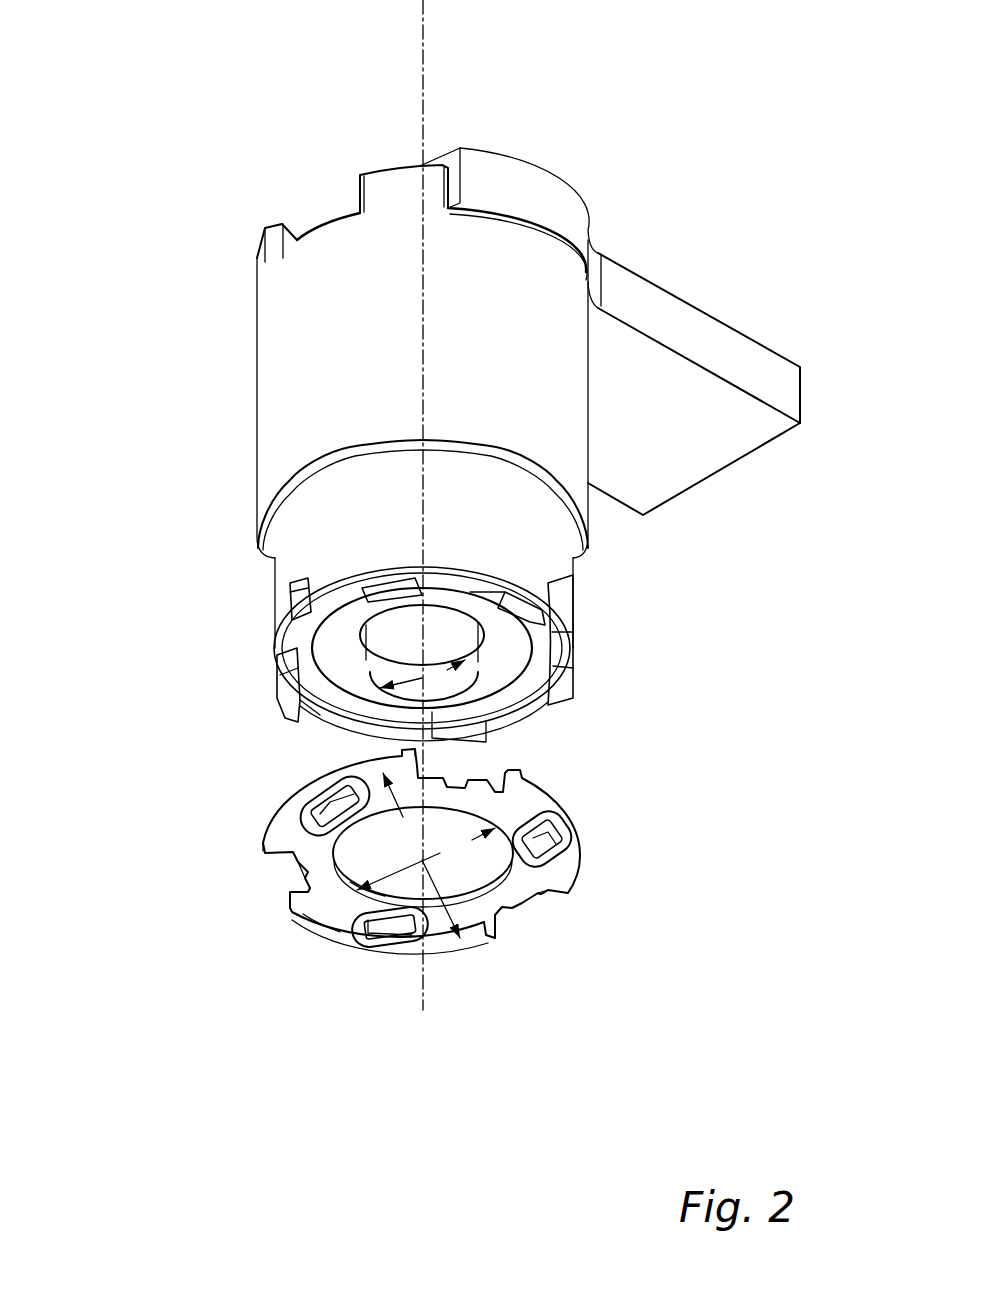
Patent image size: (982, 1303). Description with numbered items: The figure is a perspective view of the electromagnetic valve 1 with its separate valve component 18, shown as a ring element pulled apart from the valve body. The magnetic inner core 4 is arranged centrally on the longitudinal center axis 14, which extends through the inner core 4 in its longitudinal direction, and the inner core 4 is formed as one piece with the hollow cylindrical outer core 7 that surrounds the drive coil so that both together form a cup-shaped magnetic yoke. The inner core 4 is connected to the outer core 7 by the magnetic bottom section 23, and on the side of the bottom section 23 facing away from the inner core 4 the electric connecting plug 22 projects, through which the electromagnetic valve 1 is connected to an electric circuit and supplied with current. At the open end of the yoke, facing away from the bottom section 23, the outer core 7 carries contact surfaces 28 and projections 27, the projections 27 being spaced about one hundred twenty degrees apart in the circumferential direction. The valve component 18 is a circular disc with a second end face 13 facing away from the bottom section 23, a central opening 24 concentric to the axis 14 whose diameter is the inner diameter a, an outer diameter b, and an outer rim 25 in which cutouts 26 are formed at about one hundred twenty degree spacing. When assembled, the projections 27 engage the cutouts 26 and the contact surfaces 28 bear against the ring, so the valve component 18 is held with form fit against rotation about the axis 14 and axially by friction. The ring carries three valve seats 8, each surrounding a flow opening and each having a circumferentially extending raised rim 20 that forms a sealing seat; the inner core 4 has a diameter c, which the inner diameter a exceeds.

The electromagnetic valve 1 is at (217, 190).
The magnetic inner core 4 is at (468, 680).
The hollow cylindrical outer core 7 is at (350, 497).
The valve seat 8 is at (307, 800).
The second end face 13 is at (570, 898).
The longitudinal center axis 14 is at (425, 118).
The valve component 18 is at (495, 940).
The raised rim 20 is at (303, 822).
The electric connecting plug 22 is at (680, 330).
The magnetic bottom section 23 is at (344, 216).
The central opening 24 is at (370, 861).
The outer rim 25 is at (320, 923).
The cutout 26 is at (290, 880).
The projection 27 is at (283, 693).
The contact surface 28 is at (350, 563).